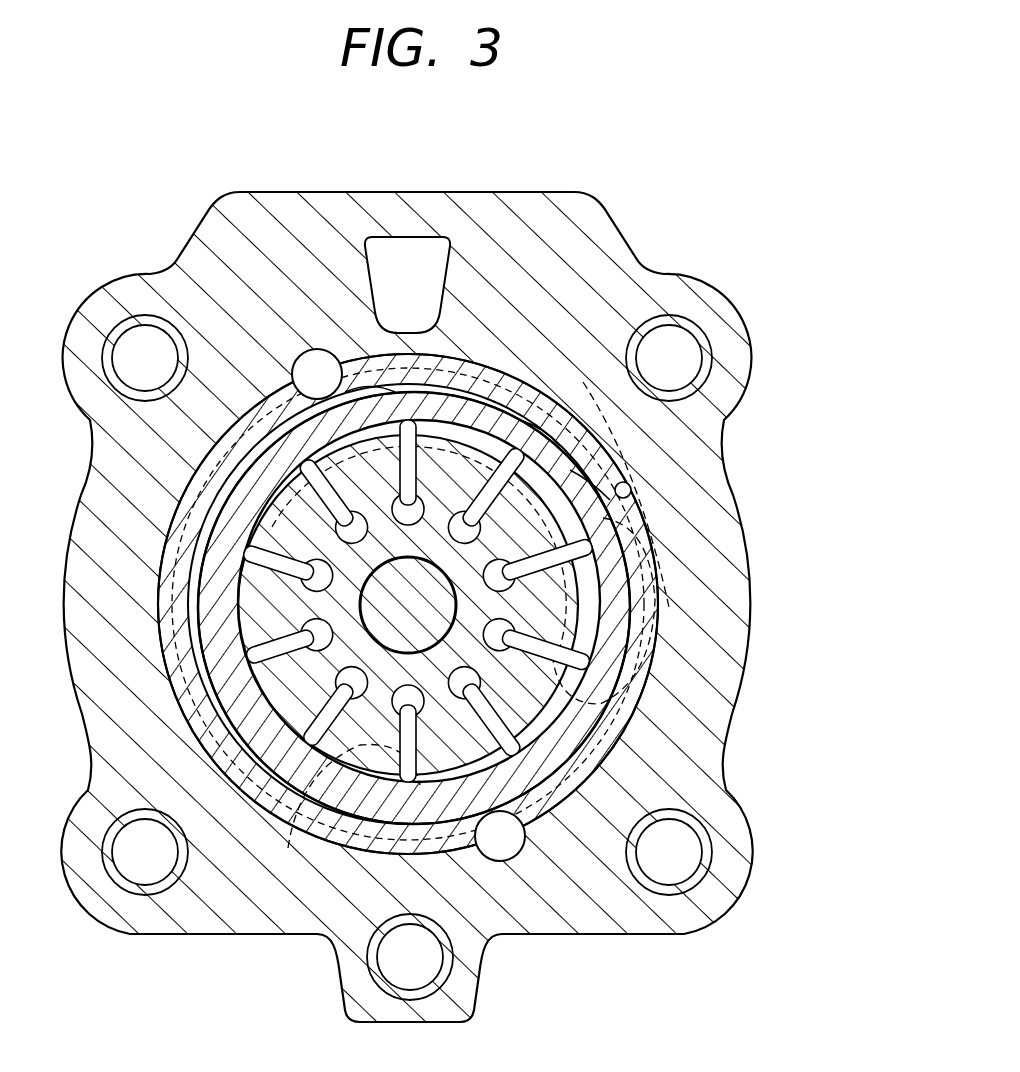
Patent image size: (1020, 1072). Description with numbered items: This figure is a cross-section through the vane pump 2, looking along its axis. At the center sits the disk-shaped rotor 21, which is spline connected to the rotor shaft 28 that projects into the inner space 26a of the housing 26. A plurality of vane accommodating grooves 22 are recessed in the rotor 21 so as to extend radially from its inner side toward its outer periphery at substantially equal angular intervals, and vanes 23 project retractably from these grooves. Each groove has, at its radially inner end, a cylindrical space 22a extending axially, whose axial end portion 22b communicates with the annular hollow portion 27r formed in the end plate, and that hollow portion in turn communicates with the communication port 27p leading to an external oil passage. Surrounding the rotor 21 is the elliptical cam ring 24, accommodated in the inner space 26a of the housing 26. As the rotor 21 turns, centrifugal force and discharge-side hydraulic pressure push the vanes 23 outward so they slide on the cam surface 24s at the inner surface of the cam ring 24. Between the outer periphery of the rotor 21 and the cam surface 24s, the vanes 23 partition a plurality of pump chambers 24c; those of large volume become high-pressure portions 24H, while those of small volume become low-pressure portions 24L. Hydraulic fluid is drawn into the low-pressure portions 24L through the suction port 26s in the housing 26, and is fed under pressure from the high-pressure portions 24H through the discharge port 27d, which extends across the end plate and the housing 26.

The vane pump 2 is at (590, 152).
The rotor 21 is at (290, 520).
The vane accommodating grooves 22 is at (252, 729).
The cylindrical spaces 22a is at (626, 605).
The axial end portions 22b is at (434, 618).
The vanes 23 is at (192, 640).
The cam ring 24 is at (258, 425).
The cam surface 24s is at (503, 420).
The low-pressure portions 24L is at (547, 437).
The high-pressure portions 24H is at (562, 702).
The pump chambers 24c is at (592, 477).
The housing 26 is at (588, 260).
The inner space 26a is at (633, 492).
The suction port 26s is at (550, 356).
The communication port 27p is at (655, 542).
The discharge port 27d is at (712, 590).
The annular hollow portion 27r is at (300, 798).
The rotor shaft 28 is at (480, 683).